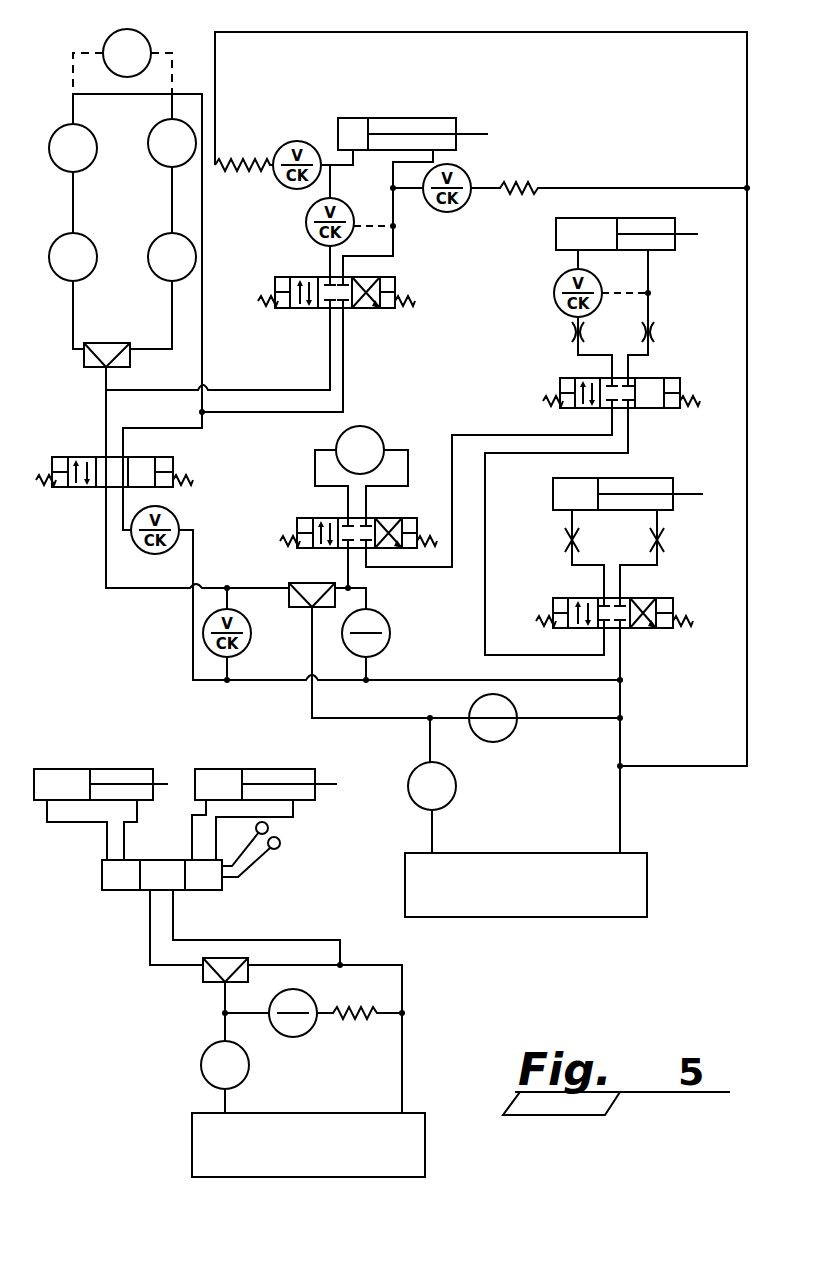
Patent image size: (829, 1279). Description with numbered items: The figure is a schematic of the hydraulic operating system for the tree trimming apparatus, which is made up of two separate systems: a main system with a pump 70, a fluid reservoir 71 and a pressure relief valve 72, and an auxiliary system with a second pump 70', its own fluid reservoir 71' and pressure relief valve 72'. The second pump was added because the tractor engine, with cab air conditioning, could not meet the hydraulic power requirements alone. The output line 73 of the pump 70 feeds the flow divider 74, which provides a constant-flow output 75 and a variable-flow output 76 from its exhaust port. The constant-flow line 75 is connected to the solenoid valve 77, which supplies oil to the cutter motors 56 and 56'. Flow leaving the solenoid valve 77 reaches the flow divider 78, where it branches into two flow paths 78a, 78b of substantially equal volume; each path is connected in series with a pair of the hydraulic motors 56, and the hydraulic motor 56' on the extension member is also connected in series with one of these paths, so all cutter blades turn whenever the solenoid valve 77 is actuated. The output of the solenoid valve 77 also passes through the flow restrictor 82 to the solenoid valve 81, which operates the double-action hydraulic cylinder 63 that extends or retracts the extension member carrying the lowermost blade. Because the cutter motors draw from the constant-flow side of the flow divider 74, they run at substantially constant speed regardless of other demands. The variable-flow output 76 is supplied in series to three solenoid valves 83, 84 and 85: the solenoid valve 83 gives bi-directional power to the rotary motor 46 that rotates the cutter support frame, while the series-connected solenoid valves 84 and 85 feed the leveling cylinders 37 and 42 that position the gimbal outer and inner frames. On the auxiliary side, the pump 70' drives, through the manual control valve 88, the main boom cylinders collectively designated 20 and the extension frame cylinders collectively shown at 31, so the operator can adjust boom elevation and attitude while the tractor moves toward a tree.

The hydraulic motor 56' is at (133, 51).
The hydraulic motors 56 is at (122, 200).
The flow divider 78 is at (117, 336).
The flow path 78a is at (72, 318).
The flow path 78b is at (172, 318).
The flow restrictor 82 is at (150, 397).
The solenoid valve 81 is at (373, 310).
The double-action hydraulic cylinder 63 is at (416, 118).
The leveling cylinder 37 is at (556, 232).
The solenoid valve 84 is at (656, 378).
The leveling cylinder 42 is at (660, 478).
The solenoid valve 85 is at (648, 630).
The rotary motor 46 is at (371, 427).
The solenoid valve 83 is at (322, 518).
The solenoid valve 77 is at (93, 488).
The constant-flow output 75 is at (250, 588).
The flow divider 74 is at (302, 583).
The variable-flow output 76 is at (352, 585).
The fluid reservoir 71 is at (494, 781).
The pressure relief valve 72 is at (514, 735).
The output line 73 is at (376, 718).
The pump 70 is at (458, 787).
The main boom cylinders 20 is at (102, 769).
The extension frame cylinders 31 is at (220, 769).
The manual control valve 88 is at (100, 872).
The pump 70' is at (195, 1065).
The pressure relief valve 72' is at (298, 1037).
The fluid reservoir 71' is at (278, 1145).